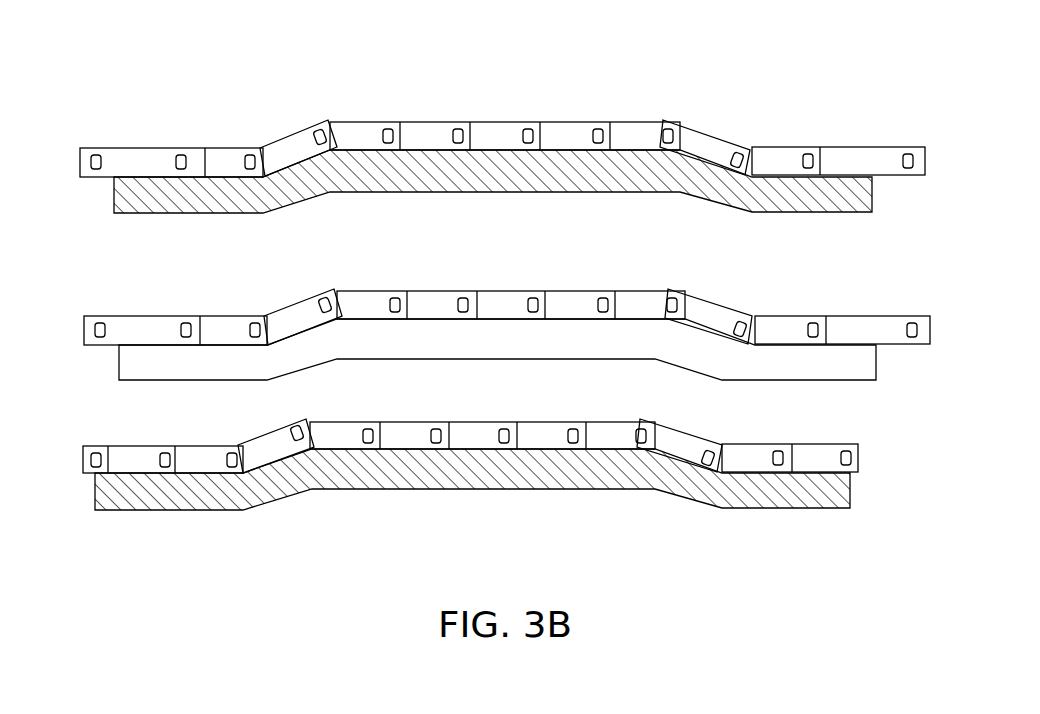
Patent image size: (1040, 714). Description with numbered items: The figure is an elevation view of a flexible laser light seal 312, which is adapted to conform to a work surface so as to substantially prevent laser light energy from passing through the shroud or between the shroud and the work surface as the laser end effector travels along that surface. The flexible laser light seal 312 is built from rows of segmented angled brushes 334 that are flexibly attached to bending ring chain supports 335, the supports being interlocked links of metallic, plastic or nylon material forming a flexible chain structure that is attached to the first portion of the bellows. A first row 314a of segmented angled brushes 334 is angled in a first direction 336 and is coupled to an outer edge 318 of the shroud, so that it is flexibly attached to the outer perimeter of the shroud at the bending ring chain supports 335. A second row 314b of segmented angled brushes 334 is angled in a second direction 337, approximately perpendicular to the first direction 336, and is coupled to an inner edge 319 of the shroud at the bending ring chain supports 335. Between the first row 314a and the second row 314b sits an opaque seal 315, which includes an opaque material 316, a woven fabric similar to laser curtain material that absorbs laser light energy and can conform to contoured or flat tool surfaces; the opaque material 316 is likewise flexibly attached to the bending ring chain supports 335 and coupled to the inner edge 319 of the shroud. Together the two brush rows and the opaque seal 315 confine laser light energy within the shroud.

The flexible laser light seal 312 is at (856, 96).
The first row 314a is at (882, 443).
The second row 314b is at (935, 140).
The opaque seal 315 is at (937, 315).
The opaque material 316 is at (119, 362).
The outer edge 318 is at (102, 441).
The inner edge 319 is at (122, 140).
The segmented angled brushes 334 is at (222, 217).
The bending ring chain supports 335 is at (375, 120).
The first direction 336 is at (333, 502).
The second direction 337 is at (430, 200).